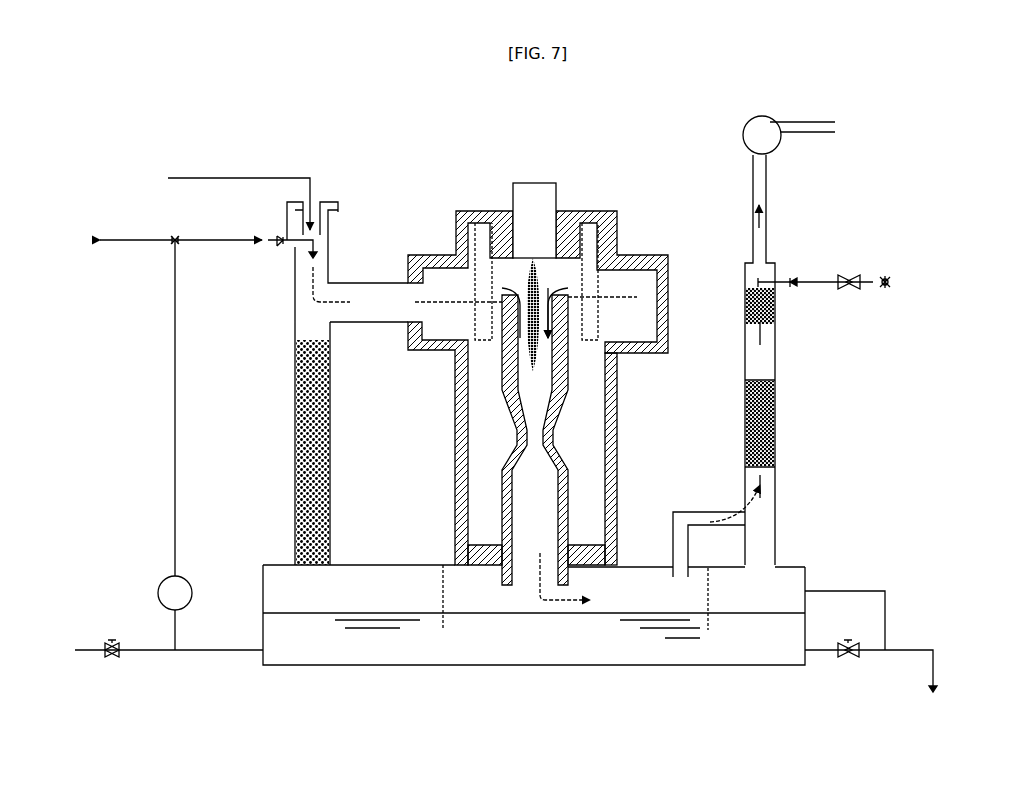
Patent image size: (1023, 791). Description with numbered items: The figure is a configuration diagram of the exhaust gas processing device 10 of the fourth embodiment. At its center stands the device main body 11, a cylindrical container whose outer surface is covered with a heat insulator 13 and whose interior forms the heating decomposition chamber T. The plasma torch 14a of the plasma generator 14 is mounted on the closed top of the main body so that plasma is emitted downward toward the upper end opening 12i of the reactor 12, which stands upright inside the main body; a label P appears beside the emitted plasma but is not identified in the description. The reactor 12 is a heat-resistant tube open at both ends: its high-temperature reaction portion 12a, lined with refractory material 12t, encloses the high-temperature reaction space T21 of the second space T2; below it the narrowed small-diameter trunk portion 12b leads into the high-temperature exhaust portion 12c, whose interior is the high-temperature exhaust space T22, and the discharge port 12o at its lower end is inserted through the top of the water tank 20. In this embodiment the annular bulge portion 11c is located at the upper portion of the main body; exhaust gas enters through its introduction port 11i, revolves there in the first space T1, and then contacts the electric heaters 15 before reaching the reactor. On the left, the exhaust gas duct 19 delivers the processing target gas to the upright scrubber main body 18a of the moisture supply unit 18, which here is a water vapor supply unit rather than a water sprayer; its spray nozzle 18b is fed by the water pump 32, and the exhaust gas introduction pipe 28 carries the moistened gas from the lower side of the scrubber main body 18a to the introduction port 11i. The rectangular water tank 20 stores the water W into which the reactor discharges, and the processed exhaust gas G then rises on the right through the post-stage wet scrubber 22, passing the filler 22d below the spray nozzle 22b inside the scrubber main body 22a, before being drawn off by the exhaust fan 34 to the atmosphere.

The exhaust gas processing device 10 is at (452, 150).
The device main body 11 is at (442, 470).
The annular bulge portion 11c is at (668, 300).
The introduction port 11i is at (420, 335).
The reactor 12 is at (503, 520).
The high-temperature reaction portion 12a is at (565, 378).
The small-diameter trunk portion 12b is at (548, 432).
The high-temperature exhaust portion 12c is at (573, 470).
The upper end opening 12i is at (548, 318).
The discharge port 12o is at (520, 583).
The refractory material 12t is at (483, 430).
The heat insulator 13 is at (455, 243).
The plasma generator 14 is at (545, 198).
The plasma torch 14a is at (530, 198).
The electric heaters 15 is at (455, 215).
The moisture supply unit 18 is at (278, 350).
The scrubber main body 18a is at (295, 445).
The spray nozzle 18b is at (278, 238).
The exhaust gas duct 19 is at (242, 167).
The water tank 20 is at (345, 693).
The post-stage wet scrubber 22 is at (790, 295).
The scrubber main body 22a is at (778, 365).
The spray nozzle 22b is at (780, 276).
The filler 22d is at (778, 430).
The exhaust gas introduction pipe 28 is at (355, 285).
The water pump 32 is at (185, 578).
The exhaust fan 34 is at (766, 140).
The heating decomposition chamber T is at (565, 270).
The plasma P is at (525, 300).
The water W is at (305, 297).
The processed exhaust gas G is at (778, 508).
The first space T1 is at (448, 330).
The second space T2 is at (534, 394).
The high-temperature reaction space T21 is at (565, 358).
The high-temperature exhaust space T22 is at (532, 512).